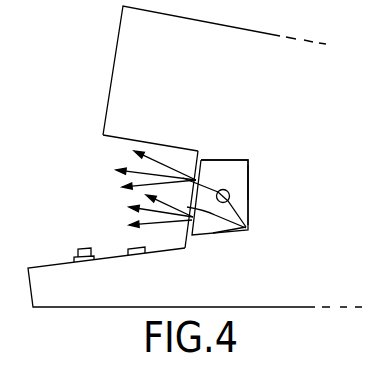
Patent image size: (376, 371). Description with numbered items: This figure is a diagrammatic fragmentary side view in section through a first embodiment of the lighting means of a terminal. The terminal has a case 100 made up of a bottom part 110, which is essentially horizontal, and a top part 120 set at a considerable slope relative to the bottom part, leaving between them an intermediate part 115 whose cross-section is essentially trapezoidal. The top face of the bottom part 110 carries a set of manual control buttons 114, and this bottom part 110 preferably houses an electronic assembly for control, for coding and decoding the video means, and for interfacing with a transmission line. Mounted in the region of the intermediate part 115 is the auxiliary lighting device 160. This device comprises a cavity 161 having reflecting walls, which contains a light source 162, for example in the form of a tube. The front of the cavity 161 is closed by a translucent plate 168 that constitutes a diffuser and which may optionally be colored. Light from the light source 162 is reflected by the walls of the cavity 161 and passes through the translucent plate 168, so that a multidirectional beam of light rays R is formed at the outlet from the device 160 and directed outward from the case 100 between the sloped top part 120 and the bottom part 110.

The case 100 is at (47, 243).
The bottom part 110 is at (170, 294).
The manual control buttons 114 is at (80, 247).
The intermediate part 115 is at (317, 213).
The top part 120 is at (205, 75).
The auxiliary lighting device 160 is at (217, 250).
The cavity 161 is at (222, 168).
The light source 162 is at (231, 193).
The translucent plate 168 is at (248, 229).
The light rays R is at (131, 222).